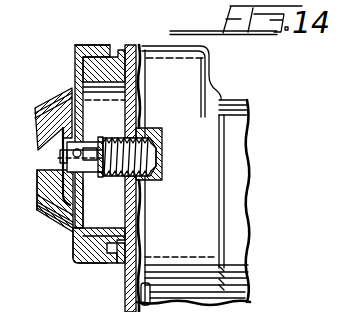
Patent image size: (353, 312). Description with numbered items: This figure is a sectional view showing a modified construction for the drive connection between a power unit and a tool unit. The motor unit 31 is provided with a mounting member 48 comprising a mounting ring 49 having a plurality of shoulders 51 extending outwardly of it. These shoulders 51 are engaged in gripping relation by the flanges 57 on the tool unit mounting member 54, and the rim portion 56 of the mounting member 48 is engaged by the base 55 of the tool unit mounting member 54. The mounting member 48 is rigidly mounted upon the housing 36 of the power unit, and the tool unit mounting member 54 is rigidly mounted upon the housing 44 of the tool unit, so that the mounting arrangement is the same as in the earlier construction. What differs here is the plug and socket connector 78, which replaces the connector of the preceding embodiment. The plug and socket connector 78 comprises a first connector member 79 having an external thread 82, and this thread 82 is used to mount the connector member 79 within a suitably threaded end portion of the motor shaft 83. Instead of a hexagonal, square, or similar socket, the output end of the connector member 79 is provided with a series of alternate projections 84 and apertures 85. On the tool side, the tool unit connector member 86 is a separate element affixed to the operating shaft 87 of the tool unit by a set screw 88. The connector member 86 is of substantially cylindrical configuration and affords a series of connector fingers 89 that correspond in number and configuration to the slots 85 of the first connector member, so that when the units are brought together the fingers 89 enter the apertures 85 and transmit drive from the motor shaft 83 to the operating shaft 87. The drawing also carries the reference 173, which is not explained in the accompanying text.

The motor unit 31 is at (147, 58).
The housing 36 is at (209, 58).
The housing 44 is at (56, 220).
The mounting member 48 is at (92, 70).
The mounting ring 49 is at (122, 258).
The shoulders 51 is at (90, 45).
The tool unit mounting member 54 is at (75, 53).
The base 55 is at (73, 245).
The rim portion 56 is at (125, 223).
The flanges 57 is at (90, 260).
The plug and socket connector 78 is at (90, 138).
The first connector member 79 is at (168, 120).
The external thread 82 is at (103, 204).
The motor shaft 83 is at (130, 149).
The projections 84 is at (103, 172).
The apertures 85 is at (101, 139).
The tool unit connector member 86 is at (55, 190).
The operating shaft 87 is at (60, 172).
The set screw 88 is at (60, 155).
The connector fingers 89 is at (60, 208).
The wall 173 is at (145, 57).